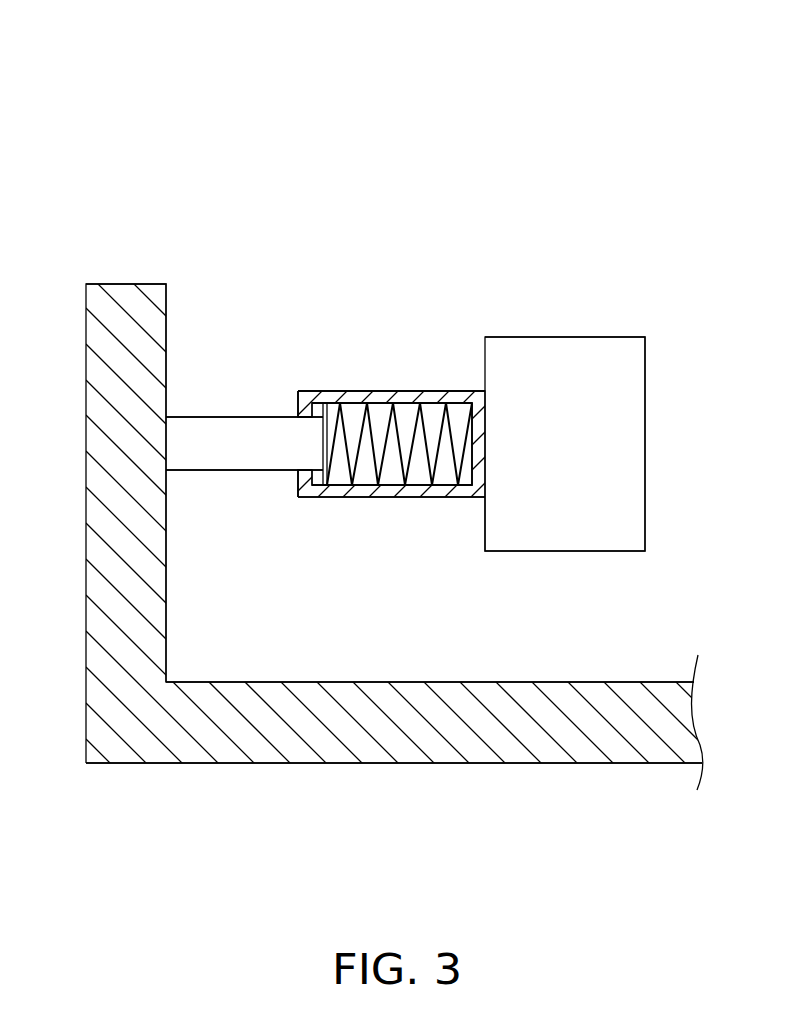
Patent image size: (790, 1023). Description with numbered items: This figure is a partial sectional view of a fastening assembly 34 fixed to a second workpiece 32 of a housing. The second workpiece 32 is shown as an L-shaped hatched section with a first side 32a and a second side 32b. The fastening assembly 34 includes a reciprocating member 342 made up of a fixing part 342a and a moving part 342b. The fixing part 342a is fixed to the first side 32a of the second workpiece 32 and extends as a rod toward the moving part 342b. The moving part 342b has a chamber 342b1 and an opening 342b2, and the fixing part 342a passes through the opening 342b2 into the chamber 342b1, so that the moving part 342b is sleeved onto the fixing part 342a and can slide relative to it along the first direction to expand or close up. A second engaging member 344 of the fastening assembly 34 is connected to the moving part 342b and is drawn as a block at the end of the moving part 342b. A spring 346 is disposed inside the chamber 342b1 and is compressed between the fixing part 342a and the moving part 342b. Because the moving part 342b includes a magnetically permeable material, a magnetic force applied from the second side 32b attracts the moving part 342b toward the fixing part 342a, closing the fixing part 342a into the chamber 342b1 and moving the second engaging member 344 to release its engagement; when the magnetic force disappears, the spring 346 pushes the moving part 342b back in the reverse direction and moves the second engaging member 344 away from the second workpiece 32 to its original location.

The second workpiece 32 is at (595, 722).
The first side 32a is at (166, 597).
The second side 32b is at (86, 600).
The fastening assembly 34 is at (447, 155).
The reciprocating member 342 is at (335, 310).
The fixing part 342a is at (218, 440).
The moving part 342b is at (307, 390).
The chamber 342b1 is at (398, 462).
The opening 342b2 is at (304, 494).
The second engaging member 344 is at (578, 359).
The spring 346 is at (400, 430).